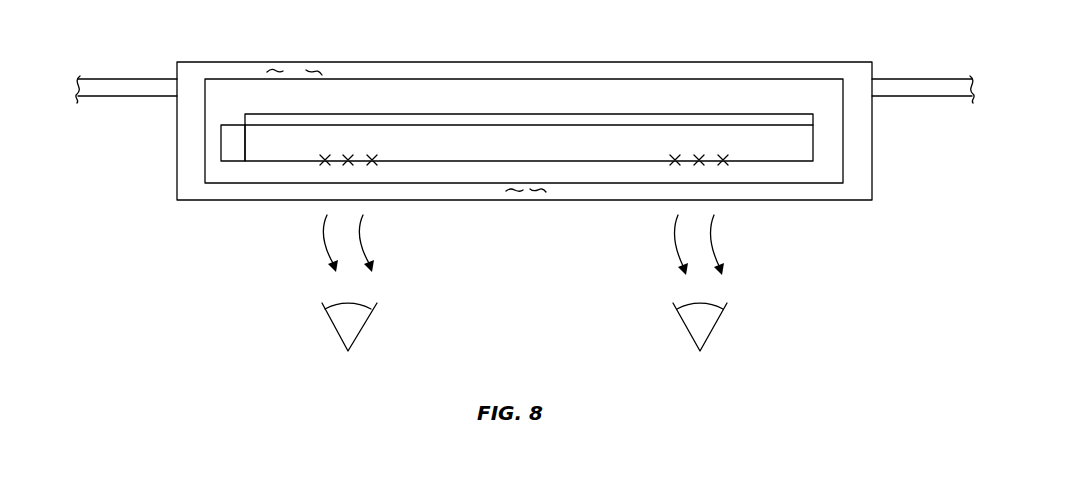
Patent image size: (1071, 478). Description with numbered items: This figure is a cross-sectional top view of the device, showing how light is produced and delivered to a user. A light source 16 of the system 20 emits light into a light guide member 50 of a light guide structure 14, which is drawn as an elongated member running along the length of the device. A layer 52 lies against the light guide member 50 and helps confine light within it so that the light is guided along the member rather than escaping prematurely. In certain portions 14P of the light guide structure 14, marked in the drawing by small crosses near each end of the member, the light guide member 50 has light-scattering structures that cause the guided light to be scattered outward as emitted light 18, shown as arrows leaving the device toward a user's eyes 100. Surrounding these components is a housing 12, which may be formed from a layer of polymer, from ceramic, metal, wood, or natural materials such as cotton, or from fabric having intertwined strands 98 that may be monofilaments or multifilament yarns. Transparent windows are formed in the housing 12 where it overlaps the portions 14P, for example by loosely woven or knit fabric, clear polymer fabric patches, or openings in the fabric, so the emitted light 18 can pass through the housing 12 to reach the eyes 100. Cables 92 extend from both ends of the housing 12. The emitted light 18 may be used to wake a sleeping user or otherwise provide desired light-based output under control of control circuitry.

The housing 12 is at (765, 68).
The light guide structure 14 is at (402, 98).
The portions of light guide structure 14P is at (322, 163).
The light source 16 is at (233, 142).
The emitted light 18 is at (363, 237).
The system 20 is at (227, 110).
The light guide member 50 is at (575, 128).
The layer 52 is at (502, 118).
The cable 92 is at (130, 83).
The strands 98 is at (313, 72).
The user's eyes 100 is at (365, 320).